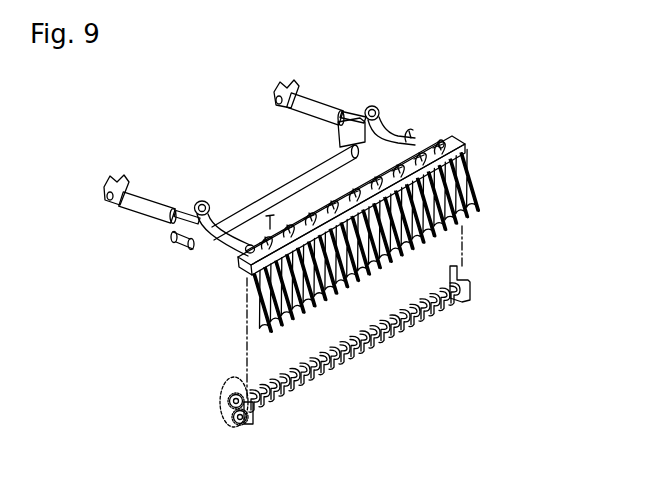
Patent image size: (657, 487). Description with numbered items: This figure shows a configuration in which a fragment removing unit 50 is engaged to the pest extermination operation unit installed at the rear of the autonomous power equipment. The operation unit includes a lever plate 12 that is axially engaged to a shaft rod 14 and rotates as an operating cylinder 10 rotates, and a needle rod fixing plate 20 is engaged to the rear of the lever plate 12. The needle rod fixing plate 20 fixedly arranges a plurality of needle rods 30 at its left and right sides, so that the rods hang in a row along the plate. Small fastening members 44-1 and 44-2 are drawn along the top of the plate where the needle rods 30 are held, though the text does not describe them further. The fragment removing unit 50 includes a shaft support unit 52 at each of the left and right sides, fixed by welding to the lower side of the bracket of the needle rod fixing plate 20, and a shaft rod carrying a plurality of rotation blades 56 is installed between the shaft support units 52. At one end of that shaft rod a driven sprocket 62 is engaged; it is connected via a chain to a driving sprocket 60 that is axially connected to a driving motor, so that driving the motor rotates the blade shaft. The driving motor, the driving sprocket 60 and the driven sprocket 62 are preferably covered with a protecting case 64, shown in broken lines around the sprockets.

The operating cylinder 10 is at (150, 209).
The lever plate 12 is at (211, 247).
The shaft rod 14 is at (297, 182).
The needle rod fixing plate 20 is at (468, 142).
The needle rods 30 is at (327, 298).
The first hook member 44-1 is at (283, 221).
The second hook member 44-2 is at (373, 175).
The fragment removing unit 50 is at (331, 359).
The shaft support unit 52 is at (467, 292).
The rotation blades 56 is at (435, 192).
The driving sprocket 60 is at (230, 403).
The driven sprocket 62 is at (234, 424).
The protecting case 64 is at (236, 377).